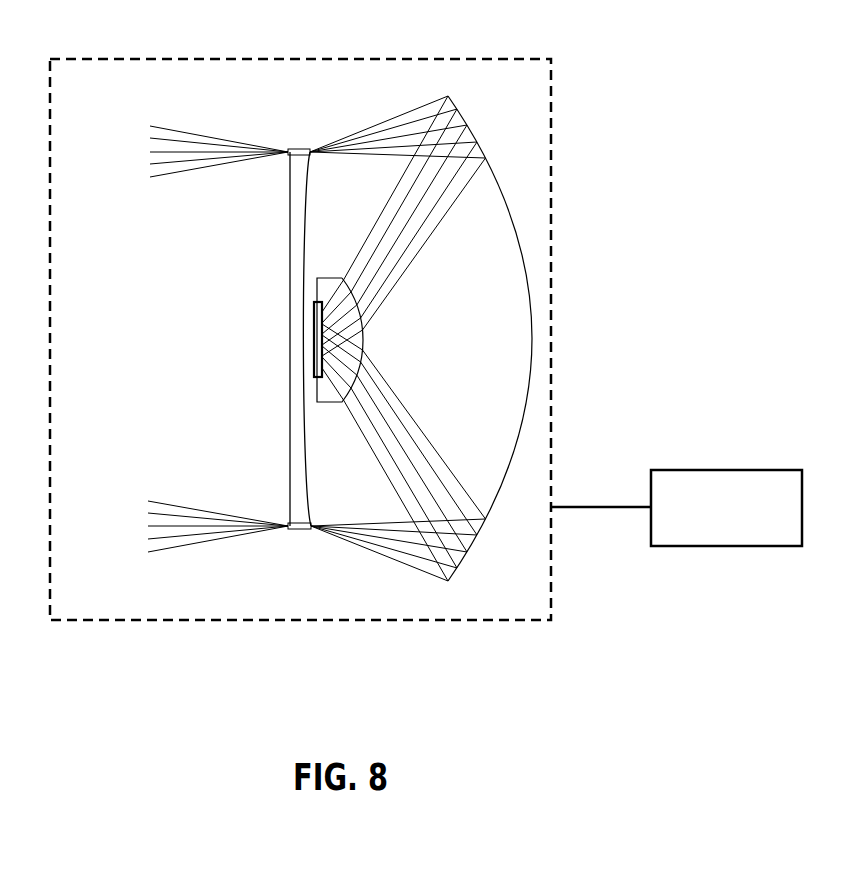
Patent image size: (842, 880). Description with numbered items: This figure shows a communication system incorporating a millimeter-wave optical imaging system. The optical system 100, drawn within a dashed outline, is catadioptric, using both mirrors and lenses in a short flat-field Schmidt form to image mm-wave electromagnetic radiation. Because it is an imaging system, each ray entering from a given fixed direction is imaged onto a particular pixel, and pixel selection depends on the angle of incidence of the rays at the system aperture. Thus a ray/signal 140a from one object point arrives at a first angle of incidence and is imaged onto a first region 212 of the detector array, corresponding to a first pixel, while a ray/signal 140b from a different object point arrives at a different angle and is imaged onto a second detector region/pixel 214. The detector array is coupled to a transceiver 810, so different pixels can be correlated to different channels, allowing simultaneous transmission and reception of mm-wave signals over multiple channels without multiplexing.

The optical system 100 is at (551, 134).
The ray/signal 140a is at (185, 130).
The ray/signal 140b is at (207, 167).
The first region of the detector array 212 is at (313, 368).
The second detector region/pixel 214 is at (313, 310).
The transceiver 810 is at (730, 468).